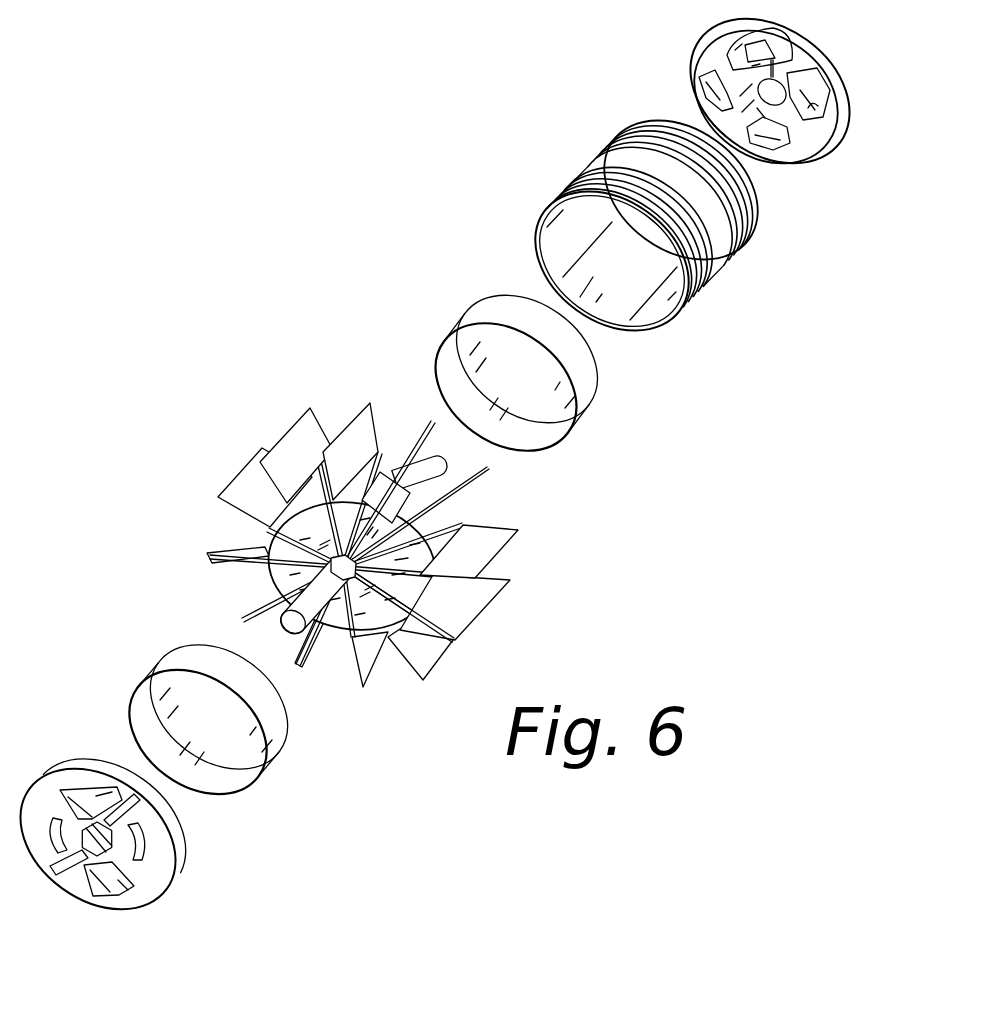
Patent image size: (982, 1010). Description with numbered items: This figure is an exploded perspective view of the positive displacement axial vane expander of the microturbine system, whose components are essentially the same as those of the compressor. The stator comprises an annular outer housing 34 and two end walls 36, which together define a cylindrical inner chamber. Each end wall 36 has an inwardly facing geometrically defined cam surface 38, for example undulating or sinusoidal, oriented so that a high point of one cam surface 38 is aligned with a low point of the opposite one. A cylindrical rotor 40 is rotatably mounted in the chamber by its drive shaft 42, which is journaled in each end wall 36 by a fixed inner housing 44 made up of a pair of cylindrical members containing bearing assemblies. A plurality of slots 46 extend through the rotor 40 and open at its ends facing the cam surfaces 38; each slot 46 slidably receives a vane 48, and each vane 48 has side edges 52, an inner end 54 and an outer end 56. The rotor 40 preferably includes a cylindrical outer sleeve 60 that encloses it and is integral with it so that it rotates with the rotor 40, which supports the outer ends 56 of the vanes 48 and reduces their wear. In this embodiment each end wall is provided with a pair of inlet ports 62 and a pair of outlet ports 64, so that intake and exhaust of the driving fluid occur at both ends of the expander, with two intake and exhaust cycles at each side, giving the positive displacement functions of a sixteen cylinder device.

The annular outer housing 34 is at (596, 166).
The end wall 36 is at (836, 64).
The cam surface 38 is at (712, 48).
The rotor 40 is at (246, 548).
The drive shaft 42 is at (272, 630).
The fixed inner housing 44 is at (297, 620).
The slot 46 is at (505, 535).
The vane 48 is at (365, 408).
The side edge 52 is at (268, 464).
The inner end 54 is at (392, 460).
The outer end 56 is at (302, 416).
The outer sleeve 60 is at (473, 314).
The inlet port 62 is at (794, 45).
The outlet port 64 is at (820, 114).